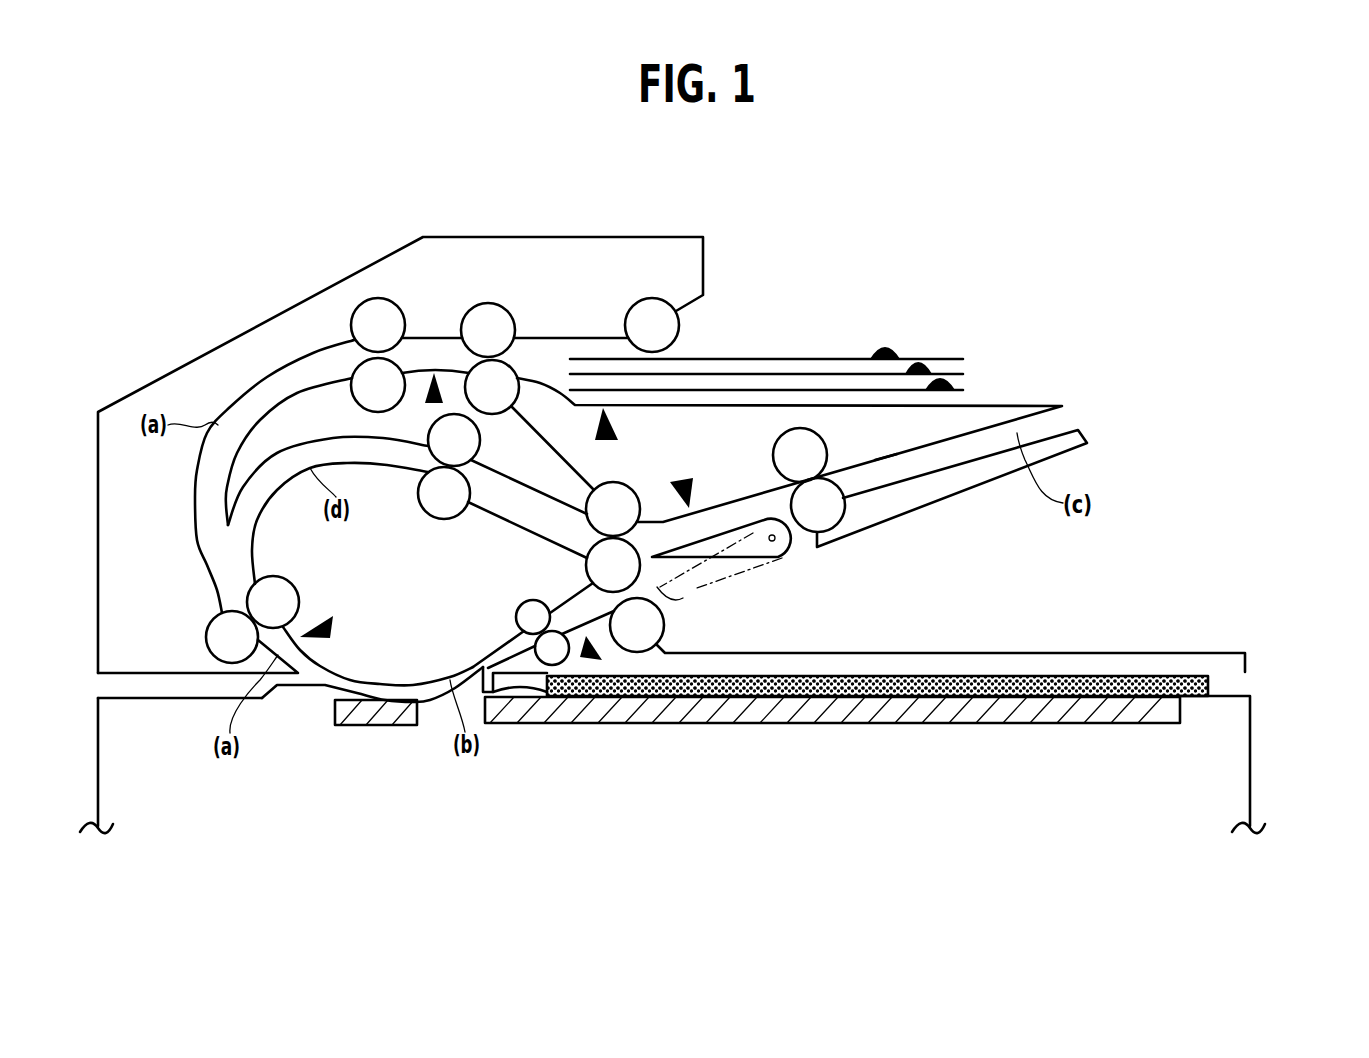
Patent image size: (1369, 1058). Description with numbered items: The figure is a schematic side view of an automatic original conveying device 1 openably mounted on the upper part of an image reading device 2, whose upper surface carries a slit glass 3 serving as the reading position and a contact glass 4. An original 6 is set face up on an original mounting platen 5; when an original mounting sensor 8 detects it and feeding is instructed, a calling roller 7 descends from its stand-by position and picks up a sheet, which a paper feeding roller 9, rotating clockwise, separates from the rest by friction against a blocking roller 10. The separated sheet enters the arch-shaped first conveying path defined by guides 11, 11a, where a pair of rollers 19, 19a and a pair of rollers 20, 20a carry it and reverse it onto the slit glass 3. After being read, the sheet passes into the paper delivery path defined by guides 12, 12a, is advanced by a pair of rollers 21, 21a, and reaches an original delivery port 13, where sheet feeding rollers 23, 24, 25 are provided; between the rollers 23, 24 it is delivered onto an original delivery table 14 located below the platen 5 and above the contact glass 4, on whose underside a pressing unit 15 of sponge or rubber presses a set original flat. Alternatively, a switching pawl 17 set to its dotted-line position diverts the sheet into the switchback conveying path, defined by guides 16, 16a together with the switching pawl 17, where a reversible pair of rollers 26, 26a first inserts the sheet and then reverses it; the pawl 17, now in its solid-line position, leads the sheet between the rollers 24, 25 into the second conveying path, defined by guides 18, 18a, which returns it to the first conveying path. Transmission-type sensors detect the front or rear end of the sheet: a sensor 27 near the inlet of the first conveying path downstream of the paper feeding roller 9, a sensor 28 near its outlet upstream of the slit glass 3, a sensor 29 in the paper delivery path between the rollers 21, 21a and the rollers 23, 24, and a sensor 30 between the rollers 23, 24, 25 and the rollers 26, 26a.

The automatic original conveying device 1 is at (77, 323).
The image reading device 2 is at (1283, 733).
The slit glass 3 is at (362, 725).
The contact glass 4 is at (1080, 723).
The original mounting platen 5 is at (1003, 402).
The original 6 is at (933, 355).
The calling roller 7 is at (657, 307).
The original mounting sensor 8 is at (618, 432).
The paper feeding roller 9 is at (497, 312).
The blocking roller 10 is at (500, 407).
The guide 11 is at (255, 372).
The guide 11a is at (225, 450).
The guide 12 is at (488, 655).
The guide 12a is at (470, 683).
The original delivery port 13 is at (680, 600).
The original delivery table 14 is at (1032, 652).
The pressing unit 15 is at (1147, 673).
The guide 16 is at (930, 473).
The guide 16a is at (883, 455).
The switching pawl 17 is at (780, 555).
The guide 18 is at (353, 438).
The guide 18a is at (277, 490).
The roller 19 is at (390, 308).
The roller 19a is at (362, 395).
The roller 20 is at (213, 630).
The roller 20a is at (293, 593).
The roller 21 is at (555, 655).
The roller 21a is at (527, 607).
The sheet feeding roller 23 is at (665, 623).
The sheet feeding roller 24 is at (588, 567).
The sheet feeding roller 25 is at (617, 487).
The roller 26 is at (830, 527).
The roller 26a is at (778, 452).
The sensor 27 is at (425, 402).
The sensor 28 is at (333, 622).
The sensor 29 is at (593, 662).
The sensor 30 is at (695, 482).